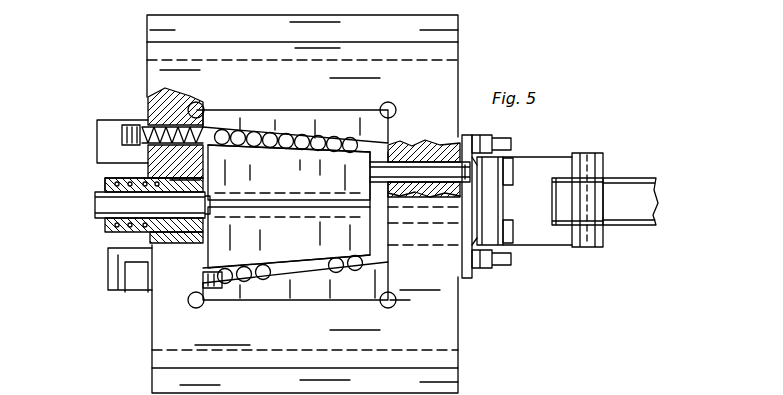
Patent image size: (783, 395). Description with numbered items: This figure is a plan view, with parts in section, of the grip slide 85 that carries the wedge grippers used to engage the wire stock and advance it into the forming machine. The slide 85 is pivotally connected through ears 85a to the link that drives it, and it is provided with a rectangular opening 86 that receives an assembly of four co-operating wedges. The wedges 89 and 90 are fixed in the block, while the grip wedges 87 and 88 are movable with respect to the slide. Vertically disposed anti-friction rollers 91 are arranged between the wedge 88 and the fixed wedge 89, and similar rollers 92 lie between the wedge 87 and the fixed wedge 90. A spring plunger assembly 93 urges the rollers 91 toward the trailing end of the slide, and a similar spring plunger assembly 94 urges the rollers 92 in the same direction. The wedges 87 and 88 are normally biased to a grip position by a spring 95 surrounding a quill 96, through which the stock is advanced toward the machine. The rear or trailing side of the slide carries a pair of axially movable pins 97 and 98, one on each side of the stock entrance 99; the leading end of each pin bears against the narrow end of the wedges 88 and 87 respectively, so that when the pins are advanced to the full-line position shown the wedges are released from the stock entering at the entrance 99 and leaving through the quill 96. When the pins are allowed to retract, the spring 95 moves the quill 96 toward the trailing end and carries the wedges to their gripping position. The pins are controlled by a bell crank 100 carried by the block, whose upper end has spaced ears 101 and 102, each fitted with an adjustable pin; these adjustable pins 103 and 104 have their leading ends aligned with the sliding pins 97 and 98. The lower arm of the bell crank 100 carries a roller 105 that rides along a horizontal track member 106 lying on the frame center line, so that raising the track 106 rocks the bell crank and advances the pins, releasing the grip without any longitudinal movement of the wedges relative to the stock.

The slide 85 is at (346, 339).
The ears 85a is at (108, 132).
The rectangular opening 86 is at (108, 176).
The grip wedge 87 is at (282, 243).
The grip wedge 88 is at (310, 181).
The fixed wedge 89 is at (362, 98).
The fixed wedge 90 is at (311, 288).
The anti-friction rollers 91 is at (244, 131).
The anti-friction rollers 92 is at (262, 279).
The spring plunger assembly 93 is at (178, 140).
The spring plunger assembly 94 is at (210, 280).
The spring 95 is at (127, 234).
The quill 96 is at (107, 225).
The axially movable pin 97 is at (427, 162).
The axially movable pin 98 is at (468, 258).
The stock entrance 99 is at (422, 202).
The bell crank 100 is at (557, 163).
The ear 101 is at (507, 226).
The ear 102 is at (506, 156).
The adjustable pin 103 is at (504, 170).
The adjustable pin 104 is at (512, 244).
The roller 105 is at (604, 193).
The horizontal track member 106 is at (658, 199).